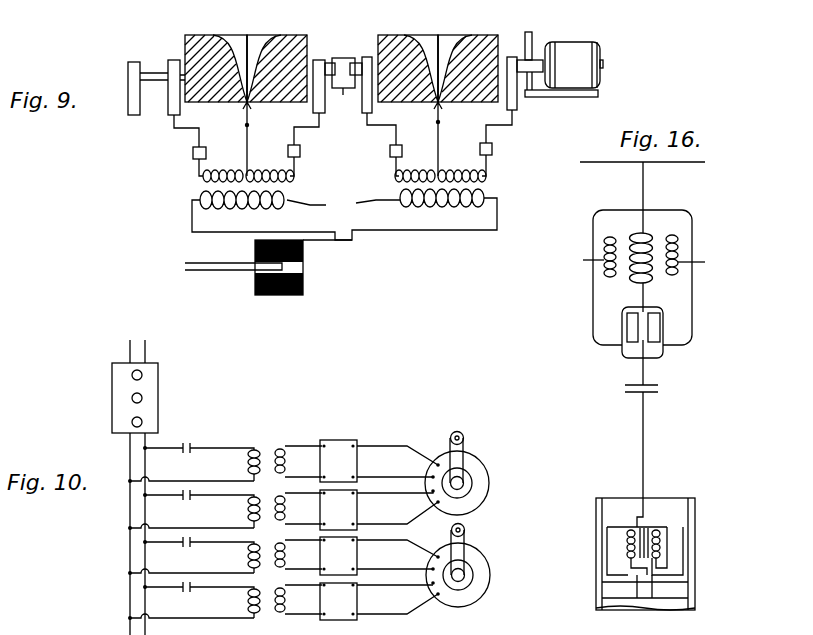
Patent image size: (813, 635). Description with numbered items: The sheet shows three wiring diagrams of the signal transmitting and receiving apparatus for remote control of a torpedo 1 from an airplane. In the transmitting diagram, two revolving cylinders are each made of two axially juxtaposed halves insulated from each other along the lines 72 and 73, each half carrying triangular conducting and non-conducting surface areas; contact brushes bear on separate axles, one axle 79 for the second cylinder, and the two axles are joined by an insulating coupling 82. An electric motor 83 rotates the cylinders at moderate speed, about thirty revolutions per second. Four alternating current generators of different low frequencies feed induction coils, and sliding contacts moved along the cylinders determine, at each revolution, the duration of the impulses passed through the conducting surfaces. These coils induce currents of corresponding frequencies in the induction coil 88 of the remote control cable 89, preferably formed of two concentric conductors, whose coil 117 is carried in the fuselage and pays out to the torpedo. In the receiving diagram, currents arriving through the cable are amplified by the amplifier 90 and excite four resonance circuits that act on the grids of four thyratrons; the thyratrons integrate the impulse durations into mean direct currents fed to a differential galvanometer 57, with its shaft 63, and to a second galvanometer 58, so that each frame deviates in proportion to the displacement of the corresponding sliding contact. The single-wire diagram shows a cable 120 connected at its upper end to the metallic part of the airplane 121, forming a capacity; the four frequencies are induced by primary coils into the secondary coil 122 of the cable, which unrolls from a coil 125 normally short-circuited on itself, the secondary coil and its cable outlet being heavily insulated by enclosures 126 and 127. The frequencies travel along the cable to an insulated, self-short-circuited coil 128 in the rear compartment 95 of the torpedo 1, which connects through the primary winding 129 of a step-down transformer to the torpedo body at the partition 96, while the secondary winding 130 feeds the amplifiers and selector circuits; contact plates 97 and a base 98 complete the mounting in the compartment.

In FIG. 9, the insulating line 72 is at (247, 35).
In FIG. 9, the insulating coupling 82 is at (343, 84).
In FIG. 9, the insulating line 73 is at (438, 35).
In FIG. 9, the axle 79 is at (522, 60).
In FIG. 9, the electric motor 83 is at (574, 48).
In FIG. 9, the induction coil 88 is at (344, 214).
In FIG. 9, the remote control cable 89 is at (323, 240).
In FIG. 10, the remote control cable 89 is at (145, 348).
In FIG. 9, the coil 117 is at (285, 296).
In FIG. 10, the amplifier 90 is at (145, 398).
In FIG. 10, the galvanometer 57 is at (489, 483).
In FIG. 10, the shaft 63 is at (464, 453).
In FIG. 10, the galvanometer 58 is at (484, 567).
In FIG. 16, the metallic part of the airplane 121 is at (653, 163).
In FIG. 16, the secondary coil 122 is at (653, 237).
In FIG. 16, the coil 125 is at (655, 330).
In FIG. 16, the insulating enclosure 126 is at (592, 320).
In FIG. 16, the insulating enclosure 127 is at (620, 353).
In FIG. 16, the cable 120 is at (647, 413).
In FIG. 16, the torpedo 1 is at (693, 533).
In FIG. 16, the coil 128 is at (615, 507).
In FIG. 16, the primary winding 129 is at (627, 543).
In FIG. 16, the secondary winding 130 is at (662, 547).
In FIG. 16, the rear compartment 95 is at (617, 573).
In FIG. 16, the partition 96 is at (610, 588).
In FIG. 16, the contact plate 97 is at (682, 592).
In FIG. 16, the base 98 is at (653, 607).